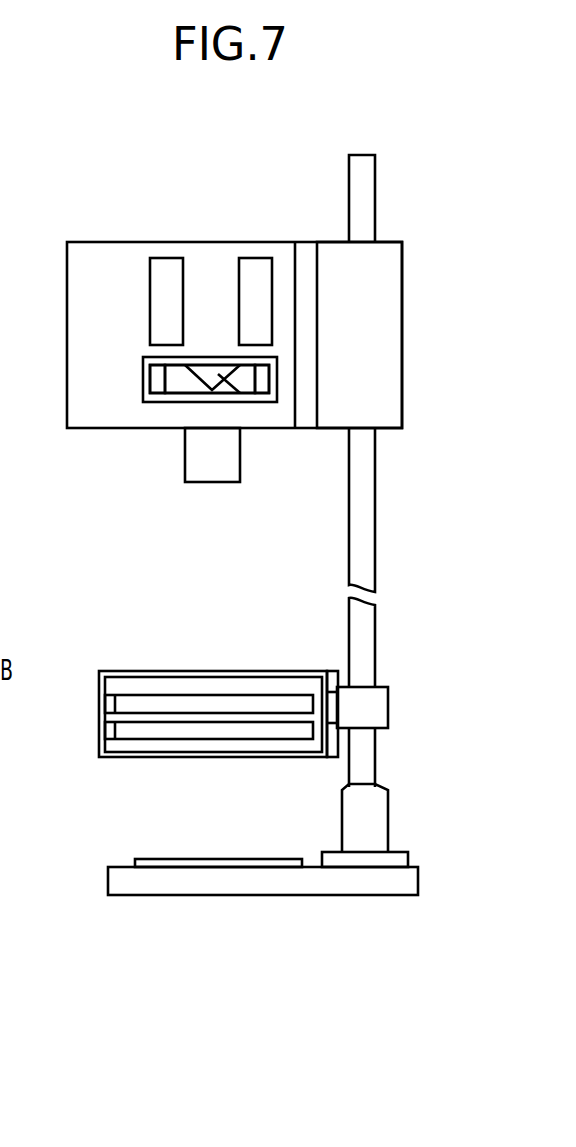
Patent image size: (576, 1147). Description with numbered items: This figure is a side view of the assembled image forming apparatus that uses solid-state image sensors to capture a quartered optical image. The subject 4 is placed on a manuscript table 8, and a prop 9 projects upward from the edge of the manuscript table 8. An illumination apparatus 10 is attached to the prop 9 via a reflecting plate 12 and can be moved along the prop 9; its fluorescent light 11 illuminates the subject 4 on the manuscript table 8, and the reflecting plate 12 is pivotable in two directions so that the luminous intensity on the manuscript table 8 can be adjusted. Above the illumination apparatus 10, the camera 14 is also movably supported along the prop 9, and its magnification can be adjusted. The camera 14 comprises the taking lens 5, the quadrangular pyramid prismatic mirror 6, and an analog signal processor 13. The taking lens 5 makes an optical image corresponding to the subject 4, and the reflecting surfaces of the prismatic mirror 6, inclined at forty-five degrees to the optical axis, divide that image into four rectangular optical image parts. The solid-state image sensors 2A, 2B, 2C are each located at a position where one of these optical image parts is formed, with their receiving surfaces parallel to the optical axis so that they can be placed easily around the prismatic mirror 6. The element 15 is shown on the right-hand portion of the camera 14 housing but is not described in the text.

The solid-state image sensor 2A is at (182, 380).
The solid-state image sensor 2B is at (157, 398).
The solid-state image sensor 2C is at (262, 383).
The subject 4 is at (155, 859).
The taking lens 5 is at (203, 473).
The prismatic mirror 6 is at (242, 387).
The manuscript table 8 is at (157, 890).
The prop 9 is at (367, 548).
The illumination apparatus 10 is at (260, 685).
The fluorescent light 11 is at (263, 700).
The reflecting plate 12 is at (148, 671).
The analog signal processor 13 is at (248, 263).
The camera 14 is at (67, 287).
The support arm 15 is at (385, 370).